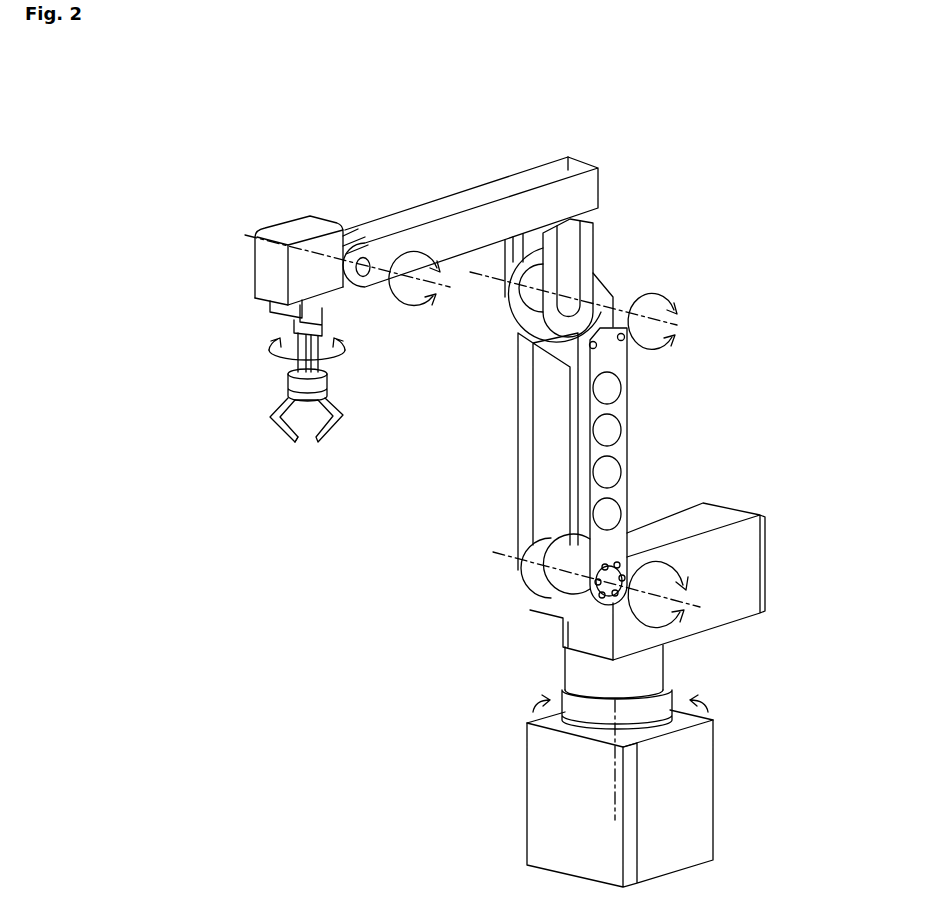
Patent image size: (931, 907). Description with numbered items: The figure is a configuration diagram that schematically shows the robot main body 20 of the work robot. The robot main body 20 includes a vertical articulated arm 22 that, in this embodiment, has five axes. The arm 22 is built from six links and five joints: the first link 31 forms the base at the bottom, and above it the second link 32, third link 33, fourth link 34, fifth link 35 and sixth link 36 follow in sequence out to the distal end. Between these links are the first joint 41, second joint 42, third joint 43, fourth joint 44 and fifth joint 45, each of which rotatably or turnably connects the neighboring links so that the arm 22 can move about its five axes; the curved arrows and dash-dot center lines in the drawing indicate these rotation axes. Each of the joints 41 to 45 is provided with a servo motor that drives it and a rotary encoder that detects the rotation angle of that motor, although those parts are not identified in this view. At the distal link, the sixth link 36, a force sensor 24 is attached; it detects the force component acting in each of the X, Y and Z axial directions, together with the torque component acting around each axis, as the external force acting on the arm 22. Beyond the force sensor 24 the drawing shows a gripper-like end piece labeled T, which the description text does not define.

The robot main body 20 is at (651, 114).
The arm 22 is at (661, 258).
The force sensor 24 is at (288, 381).
The first link 31 is at (693, 782).
The second link 32 is at (748, 563).
The third link 33 is at (627, 428).
The fourth link 34 is at (476, 192).
The fifth link 35 is at (272, 220).
The sixth link 36 is at (335, 365).
The first joint 41 is at (533, 693).
The second joint 42 is at (533, 603).
The third joint 43 is at (510, 320).
The fourth joint 44 is at (358, 230).
The fifth joint 45 is at (325, 311).
The tool T is at (320, 446).